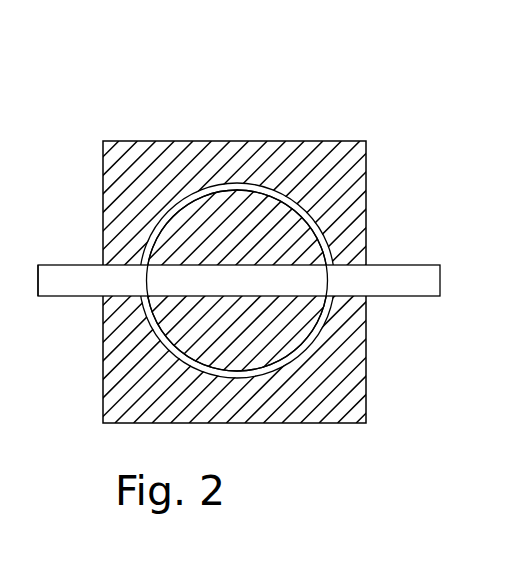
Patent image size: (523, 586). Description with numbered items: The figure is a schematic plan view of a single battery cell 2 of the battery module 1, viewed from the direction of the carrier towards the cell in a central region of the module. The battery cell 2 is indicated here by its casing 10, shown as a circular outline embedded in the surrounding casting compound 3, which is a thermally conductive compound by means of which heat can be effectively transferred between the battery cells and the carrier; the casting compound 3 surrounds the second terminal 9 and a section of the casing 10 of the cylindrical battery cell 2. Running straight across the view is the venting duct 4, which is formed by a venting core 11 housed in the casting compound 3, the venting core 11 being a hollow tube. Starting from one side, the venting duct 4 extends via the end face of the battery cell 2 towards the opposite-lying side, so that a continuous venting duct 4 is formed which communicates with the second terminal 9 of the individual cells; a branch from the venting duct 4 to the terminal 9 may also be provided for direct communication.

The battery module 1 is at (261, 269).
The battery cell 2 is at (227, 186).
The casting compound 3 is at (318, 407).
The venting duct 4 is at (403, 287).
The second terminal 9 is at (215, 281).
The casing 10 is at (175, 198).
The venting core 11 is at (63, 280).